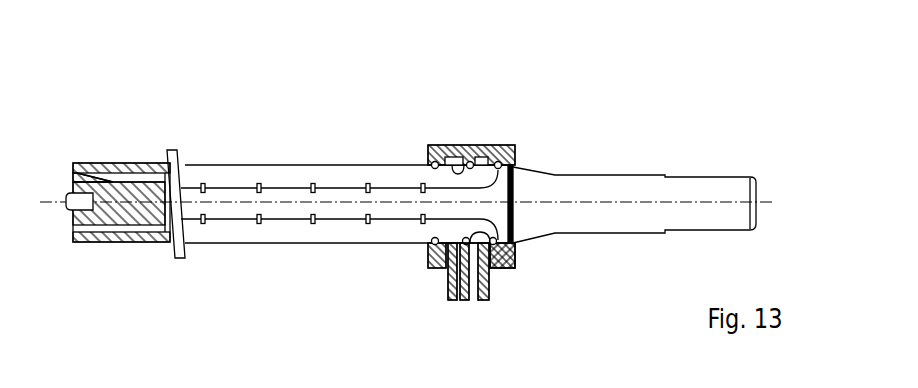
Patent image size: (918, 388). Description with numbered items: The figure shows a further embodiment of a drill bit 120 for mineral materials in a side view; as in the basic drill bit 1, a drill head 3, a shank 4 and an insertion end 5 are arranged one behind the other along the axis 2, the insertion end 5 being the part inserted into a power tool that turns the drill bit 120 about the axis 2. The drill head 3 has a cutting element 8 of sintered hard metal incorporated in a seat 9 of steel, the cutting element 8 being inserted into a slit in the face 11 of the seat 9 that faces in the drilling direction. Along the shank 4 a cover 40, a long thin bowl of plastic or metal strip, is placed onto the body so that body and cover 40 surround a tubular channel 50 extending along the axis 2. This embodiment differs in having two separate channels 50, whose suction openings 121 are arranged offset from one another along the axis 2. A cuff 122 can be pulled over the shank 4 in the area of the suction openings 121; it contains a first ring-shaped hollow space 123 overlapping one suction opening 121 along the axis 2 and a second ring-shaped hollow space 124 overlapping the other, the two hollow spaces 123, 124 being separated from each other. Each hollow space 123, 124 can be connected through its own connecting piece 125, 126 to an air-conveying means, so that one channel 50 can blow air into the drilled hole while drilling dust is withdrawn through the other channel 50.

The drill bit 1 is at (131, 387).
The axis 2 is at (585, 202).
The drill head 3 is at (108, 100).
The shank 4 is at (500, 100).
The insertion end 5 is at (743, 100).
The cutting element 8 is at (66, 202).
The seat 9 is at (112, 180).
The face 11 is at (73, 190).
The cover 40 is at (310, 175).
The channel 50 is at (167, 190).
The drill bit 120 is at (146, 65).
The suction opening 121 is at (455, 160).
The cuff 122 is at (395, 343).
The first ring-shaped hollow space 123 is at (455, 248).
The second ring-shaped hollow space 124 is at (478, 248).
The connecting piece 125 is at (452, 302).
The connecting piece 126 is at (488, 302).